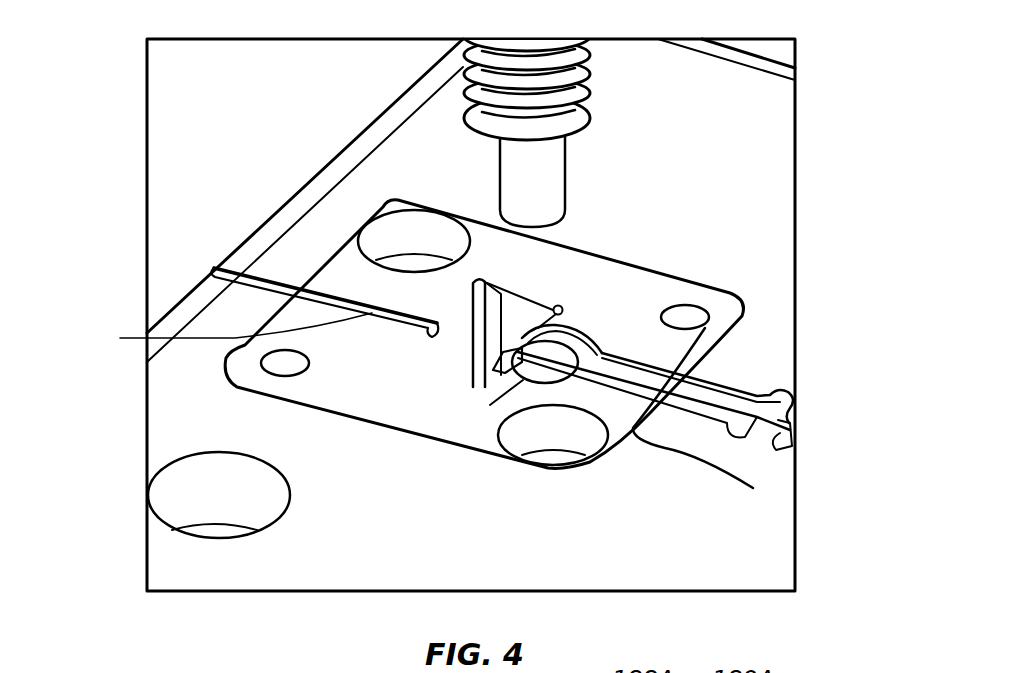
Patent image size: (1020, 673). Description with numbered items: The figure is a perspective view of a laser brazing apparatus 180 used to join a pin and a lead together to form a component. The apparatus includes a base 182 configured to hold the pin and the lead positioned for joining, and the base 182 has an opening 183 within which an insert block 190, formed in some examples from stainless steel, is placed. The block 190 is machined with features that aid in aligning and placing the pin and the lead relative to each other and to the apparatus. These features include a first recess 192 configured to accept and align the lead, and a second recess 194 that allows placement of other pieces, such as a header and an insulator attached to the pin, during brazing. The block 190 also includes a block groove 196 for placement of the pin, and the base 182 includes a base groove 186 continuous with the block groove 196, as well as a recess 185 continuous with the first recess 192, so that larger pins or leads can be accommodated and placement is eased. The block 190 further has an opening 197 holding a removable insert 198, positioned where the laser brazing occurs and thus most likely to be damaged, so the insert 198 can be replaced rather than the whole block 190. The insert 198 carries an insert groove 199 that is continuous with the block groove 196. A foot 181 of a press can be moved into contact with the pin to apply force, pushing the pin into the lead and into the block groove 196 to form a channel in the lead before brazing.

The laser brazing apparatus 180 is at (118, 117).
The foot 181 is at (552, 175).
The base 182 is at (752, 518).
The opening 183 is at (753, 488).
The recess 185 is at (735, 402).
The base groove 186 is at (258, 279).
The insert block 190 is at (578, 272).
The first recess 192 is at (600, 352).
The second recess 194 is at (476, 382).
The block groove 196 is at (822, 312).
The opening 197 is at (490, 405).
The insert 198 is at (552, 348).
The insert groove 199 is at (578, 345).